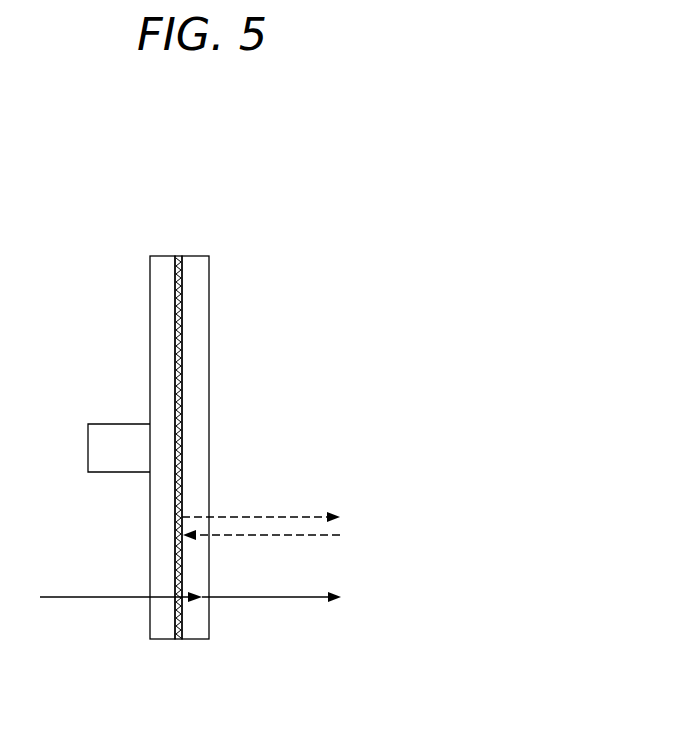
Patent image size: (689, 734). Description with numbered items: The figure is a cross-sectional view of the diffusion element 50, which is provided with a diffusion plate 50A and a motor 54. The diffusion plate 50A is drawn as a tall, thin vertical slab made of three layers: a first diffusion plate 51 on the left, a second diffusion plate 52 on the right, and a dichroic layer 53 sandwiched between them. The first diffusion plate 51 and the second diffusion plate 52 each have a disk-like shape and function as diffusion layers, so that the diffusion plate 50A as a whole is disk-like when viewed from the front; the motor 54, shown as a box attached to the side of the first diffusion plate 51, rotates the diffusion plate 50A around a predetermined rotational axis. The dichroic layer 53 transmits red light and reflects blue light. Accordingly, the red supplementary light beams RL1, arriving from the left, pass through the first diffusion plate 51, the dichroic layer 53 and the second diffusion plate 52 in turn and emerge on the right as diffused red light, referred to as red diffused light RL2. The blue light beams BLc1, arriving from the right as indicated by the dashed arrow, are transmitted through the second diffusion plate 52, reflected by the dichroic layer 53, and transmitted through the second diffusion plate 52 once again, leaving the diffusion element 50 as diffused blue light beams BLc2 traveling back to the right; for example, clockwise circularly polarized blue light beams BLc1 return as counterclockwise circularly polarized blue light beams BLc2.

The diffusion element 50 is at (294, 226).
The diffusion plate 50A is at (255, 156).
The first diffusion plate 51 is at (159, 266).
The second diffusion plate 52 is at (195, 266).
The dichroic layer 53 is at (175, 268).
The motor 54 is at (106, 432).
The blue light beams BLc1 is at (250, 535).
The blue light beams BLc2 is at (306, 517).
The red supplementary light beams RL1 is at (93, 600).
The red diffused light RL2 is at (251, 600).